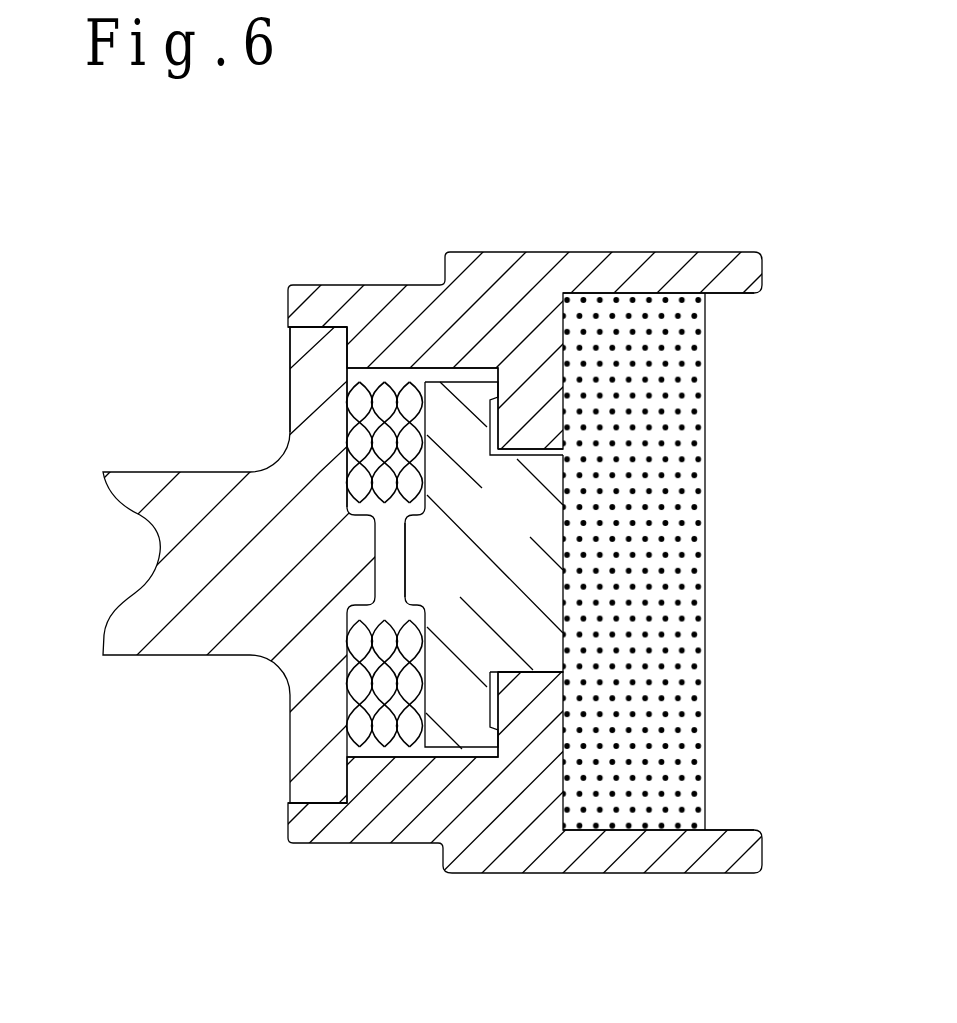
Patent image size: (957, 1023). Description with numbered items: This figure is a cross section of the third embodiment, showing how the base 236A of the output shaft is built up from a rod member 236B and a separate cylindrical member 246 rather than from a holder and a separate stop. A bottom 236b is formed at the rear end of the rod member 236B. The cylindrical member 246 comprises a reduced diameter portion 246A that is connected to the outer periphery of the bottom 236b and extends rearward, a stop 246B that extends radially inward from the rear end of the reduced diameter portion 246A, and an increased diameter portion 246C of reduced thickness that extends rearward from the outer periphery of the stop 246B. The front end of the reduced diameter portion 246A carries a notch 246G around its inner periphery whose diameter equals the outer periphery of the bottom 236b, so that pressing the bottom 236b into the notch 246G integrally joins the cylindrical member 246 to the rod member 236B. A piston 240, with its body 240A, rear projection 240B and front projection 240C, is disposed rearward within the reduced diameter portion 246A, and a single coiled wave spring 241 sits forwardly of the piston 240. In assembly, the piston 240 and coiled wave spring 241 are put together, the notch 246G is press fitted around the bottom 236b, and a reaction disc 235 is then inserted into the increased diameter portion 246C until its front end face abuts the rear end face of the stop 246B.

The reaction disc 235 is at (690, 533).
The base 236A is at (525, 562).
The rod member 236B is at (416, 565).
The bottom 236b is at (299, 402).
The piston 240 is at (606, 565).
The body 240A is at (463, 424).
The rear projection 240B is at (530, 603).
The front projection 240C is at (480, 588).
The coiled wave spring 241 is at (385, 383).
The cylindrical member 246 is at (535, 519).
The reduced diameter portion 246A is at (357, 310).
The stop 246B is at (533, 385).
The increased diameter portion 246C is at (628, 263).
The notch 246G is at (310, 320).